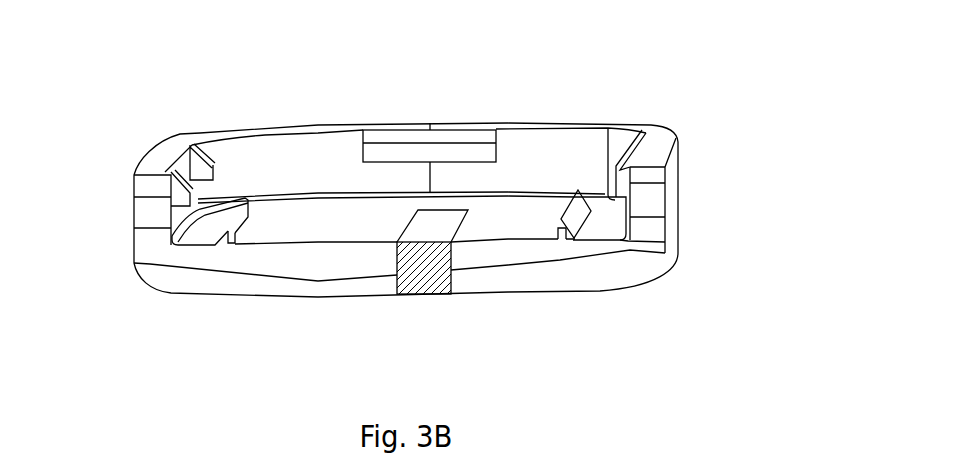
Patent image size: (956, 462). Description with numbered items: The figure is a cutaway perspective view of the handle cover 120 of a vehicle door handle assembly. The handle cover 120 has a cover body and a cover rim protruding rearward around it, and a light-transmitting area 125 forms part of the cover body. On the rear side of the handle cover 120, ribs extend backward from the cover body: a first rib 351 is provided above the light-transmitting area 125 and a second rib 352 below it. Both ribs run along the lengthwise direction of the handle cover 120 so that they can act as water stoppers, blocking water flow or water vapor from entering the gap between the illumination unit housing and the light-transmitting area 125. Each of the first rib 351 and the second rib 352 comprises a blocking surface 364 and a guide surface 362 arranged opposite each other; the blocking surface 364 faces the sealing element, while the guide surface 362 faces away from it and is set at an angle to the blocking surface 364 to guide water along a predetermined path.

The handle cover 120 is at (742, 90).
The light-transmitting area 125 is at (422, 295).
The first rib 351 is at (580, 190).
The second rib 352 is at (245, 197).
The guide surface 362 is at (210, 247).
The blocking surface 364 is at (232, 239).